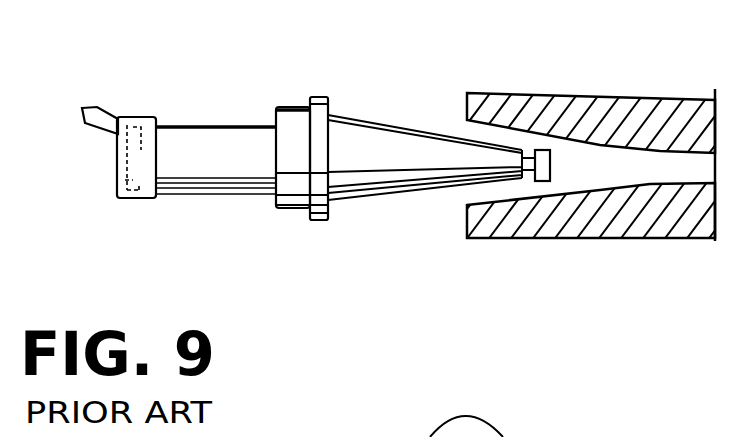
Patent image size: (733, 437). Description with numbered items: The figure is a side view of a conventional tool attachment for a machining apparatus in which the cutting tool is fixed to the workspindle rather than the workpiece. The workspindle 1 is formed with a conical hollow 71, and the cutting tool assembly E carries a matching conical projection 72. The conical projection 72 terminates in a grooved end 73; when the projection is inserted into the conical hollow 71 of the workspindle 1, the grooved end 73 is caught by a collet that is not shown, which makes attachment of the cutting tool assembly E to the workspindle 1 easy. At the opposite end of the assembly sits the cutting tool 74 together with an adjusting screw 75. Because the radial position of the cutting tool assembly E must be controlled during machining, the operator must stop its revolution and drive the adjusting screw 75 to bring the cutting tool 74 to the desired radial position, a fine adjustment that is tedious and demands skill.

The workspindle 1 is at (607, 108).
The conical hollow 71 is at (512, 203).
The conical projection 72 is at (355, 193).
The grooved end 73 is at (543, 150).
The cutting tool 74 is at (103, 117).
The adjusting screw 75 is at (128, 200).
The cutting tool assembly E is at (207, 178).